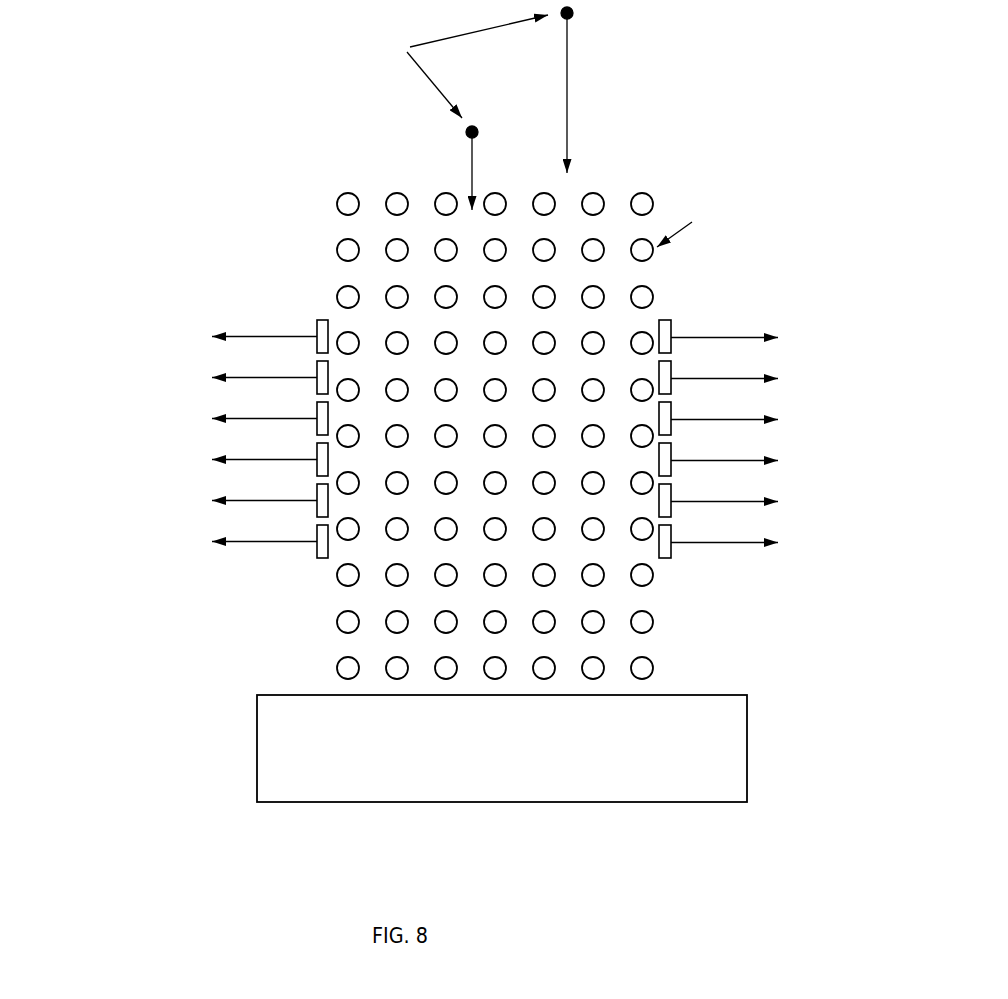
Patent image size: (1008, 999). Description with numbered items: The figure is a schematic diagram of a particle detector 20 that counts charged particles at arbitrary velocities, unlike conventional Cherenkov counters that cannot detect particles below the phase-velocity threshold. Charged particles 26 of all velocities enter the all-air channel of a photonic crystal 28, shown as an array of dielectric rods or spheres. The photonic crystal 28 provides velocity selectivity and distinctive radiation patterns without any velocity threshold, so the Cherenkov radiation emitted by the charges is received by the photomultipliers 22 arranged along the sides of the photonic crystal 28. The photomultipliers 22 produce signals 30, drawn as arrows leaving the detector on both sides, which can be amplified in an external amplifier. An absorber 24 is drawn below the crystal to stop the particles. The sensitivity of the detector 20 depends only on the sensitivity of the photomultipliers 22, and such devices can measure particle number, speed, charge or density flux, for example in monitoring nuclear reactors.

The particle detector 20 is at (180, 818).
The photomultipliers 22 is at (643, 558).
The absorber 24 is at (472, 805).
The charged particles 26 is at (359, 108).
The photonic crystal 28 is at (325, 237).
The signals 30 is at (516, 440).